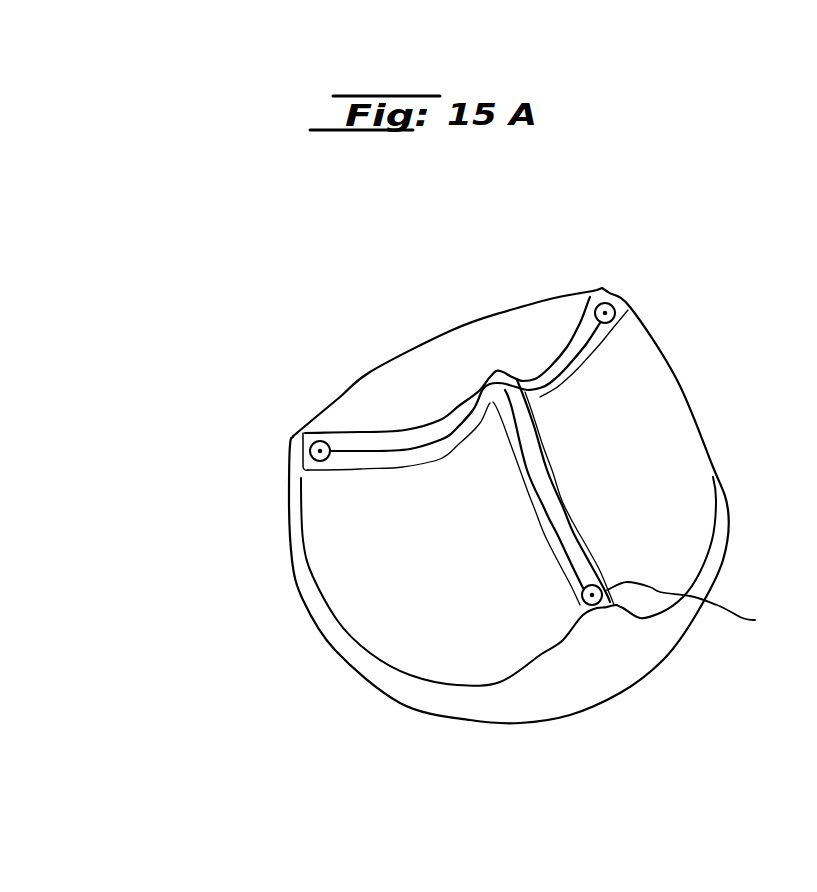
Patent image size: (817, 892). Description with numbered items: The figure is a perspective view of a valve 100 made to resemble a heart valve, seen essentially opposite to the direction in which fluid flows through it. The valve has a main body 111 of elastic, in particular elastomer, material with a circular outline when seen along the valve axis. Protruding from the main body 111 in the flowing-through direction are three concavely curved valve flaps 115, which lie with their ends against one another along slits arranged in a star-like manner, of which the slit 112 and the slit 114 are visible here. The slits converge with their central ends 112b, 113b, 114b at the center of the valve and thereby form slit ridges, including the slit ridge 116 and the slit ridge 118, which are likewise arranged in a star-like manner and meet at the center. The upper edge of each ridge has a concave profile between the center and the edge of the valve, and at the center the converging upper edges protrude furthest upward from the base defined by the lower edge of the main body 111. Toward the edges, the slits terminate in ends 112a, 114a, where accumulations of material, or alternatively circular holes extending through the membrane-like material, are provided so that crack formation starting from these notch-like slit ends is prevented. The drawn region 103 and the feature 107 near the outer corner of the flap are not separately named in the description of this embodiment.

The protective device 100 is at (330, 696).
The shell panel 103 is at (586, 352).
The rivet 107 is at (627, 287).
The main body 111 is at (413, 697).
The slit 112 is at (573, 550).
The end of slit toward the edge 112a is at (711, 609).
The central end of slit 112b is at (490, 404).
The central end of slit 113b is at (492, 370).
The slit 114 is at (360, 455).
The end of slit toward the edge 114a is at (319, 443).
The central end of slit 114b is at (487, 372).
The valve flap 115 is at (415, 380).
The slit ridge 116 is at (614, 625).
The slit ridge 118 is at (285, 456).